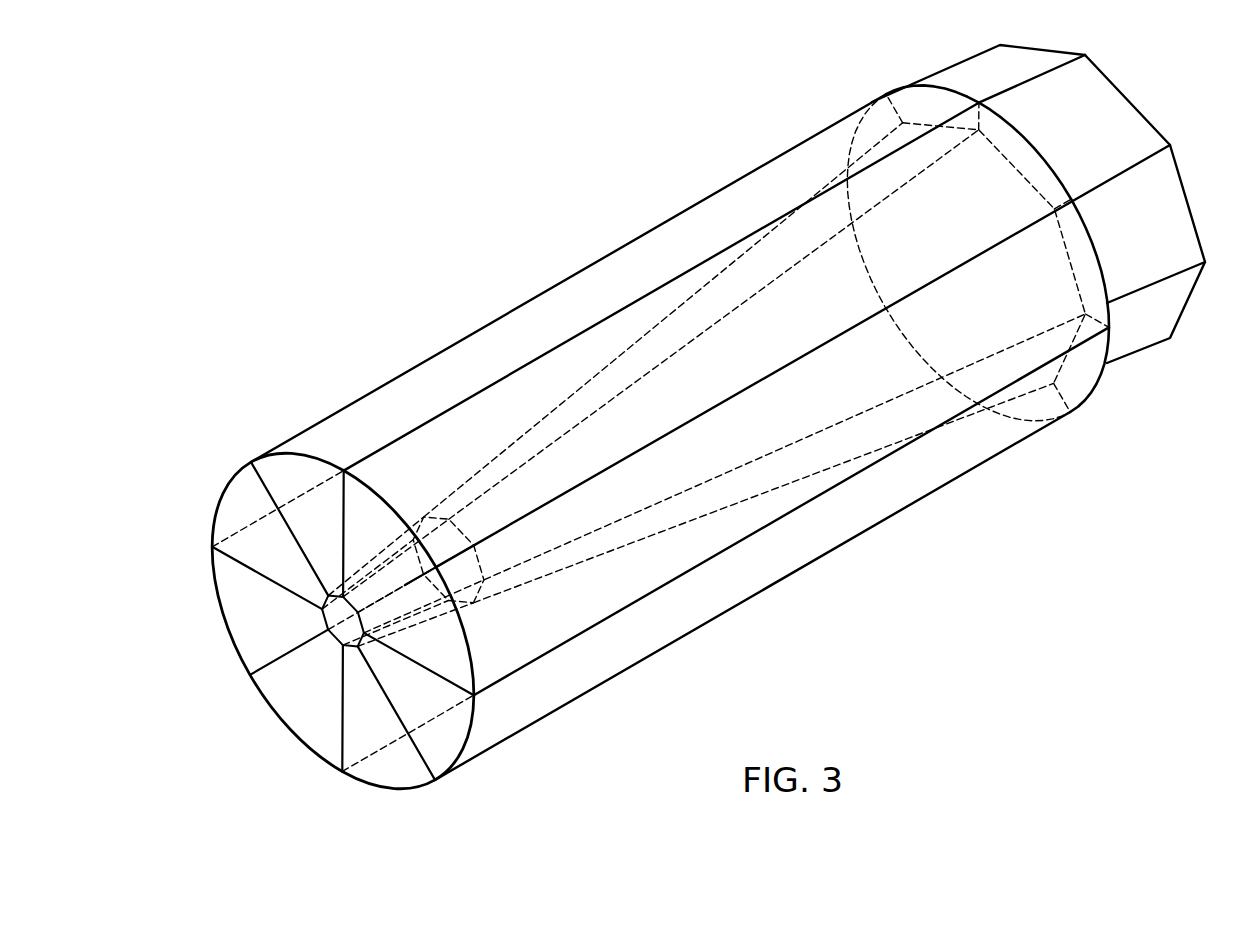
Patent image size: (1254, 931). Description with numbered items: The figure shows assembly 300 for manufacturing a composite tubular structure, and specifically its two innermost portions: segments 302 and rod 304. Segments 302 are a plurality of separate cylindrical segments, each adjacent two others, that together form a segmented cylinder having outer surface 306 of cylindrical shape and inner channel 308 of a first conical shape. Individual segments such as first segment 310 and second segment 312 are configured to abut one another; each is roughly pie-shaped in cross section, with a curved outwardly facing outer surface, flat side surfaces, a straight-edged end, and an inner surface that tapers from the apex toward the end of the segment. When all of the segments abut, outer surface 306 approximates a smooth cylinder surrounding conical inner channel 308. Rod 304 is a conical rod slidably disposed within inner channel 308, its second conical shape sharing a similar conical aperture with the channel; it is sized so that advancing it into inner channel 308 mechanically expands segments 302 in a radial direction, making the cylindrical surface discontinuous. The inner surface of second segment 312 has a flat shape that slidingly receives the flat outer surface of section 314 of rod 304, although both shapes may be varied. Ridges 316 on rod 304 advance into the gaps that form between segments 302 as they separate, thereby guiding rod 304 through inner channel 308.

The assembly 300 is at (691, 439).
The segments 302 is at (691, 432).
The rod 304 is at (1056, 215).
The outer surface 306 is at (487, 336).
The inner channel 308 is at (332, 645).
The first segment 310 is at (335, 621).
The second segment 312 is at (692, 618).
The section 314 is at (1127, 343).
The ridges 316 is at (1153, 156).